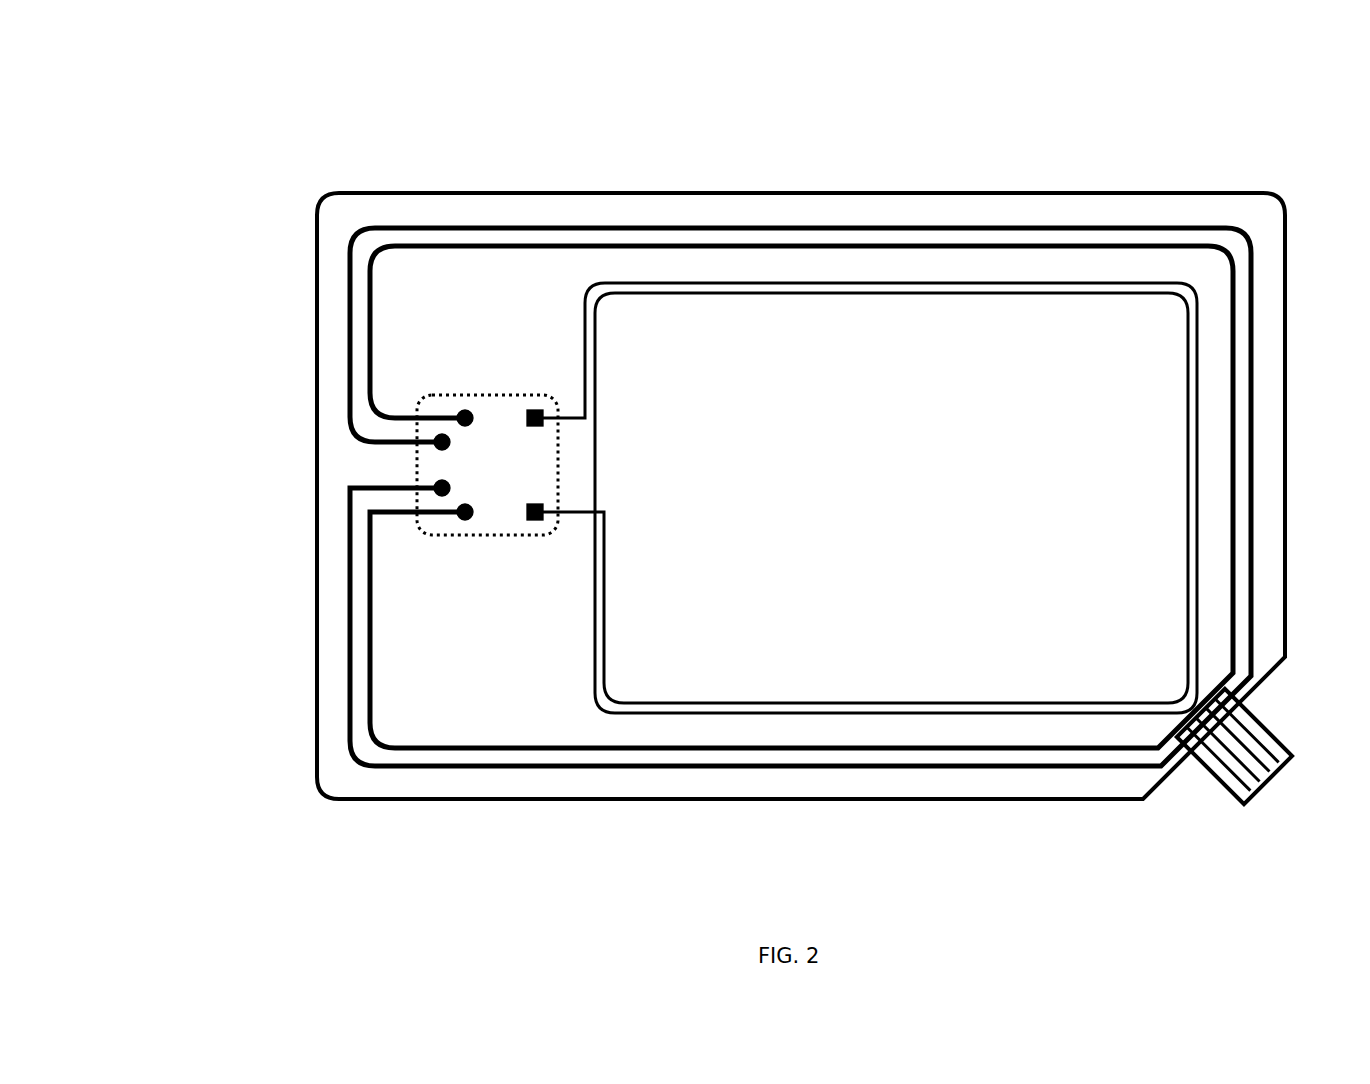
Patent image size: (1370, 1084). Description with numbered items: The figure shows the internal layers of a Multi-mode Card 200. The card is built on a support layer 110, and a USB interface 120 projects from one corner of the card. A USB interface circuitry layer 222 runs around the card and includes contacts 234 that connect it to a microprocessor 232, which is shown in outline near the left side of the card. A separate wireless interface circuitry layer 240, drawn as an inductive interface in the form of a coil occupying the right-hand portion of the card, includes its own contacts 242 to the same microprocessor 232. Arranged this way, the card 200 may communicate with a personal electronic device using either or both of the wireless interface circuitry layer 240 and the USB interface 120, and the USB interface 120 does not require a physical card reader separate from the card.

The Multi-mode Card 200 is at (226, 113).
The support layer 110 is at (531, 210).
The USB interface circuitry layer 222 is at (1253, 275).
The wireless interface circuitry layer 240 is at (890, 283).
The microprocessor 232 is at (487, 423).
The contacts 234 is at (462, 519).
The contacts 242 is at (534, 519).
The USB interface 120 is at (1262, 760).